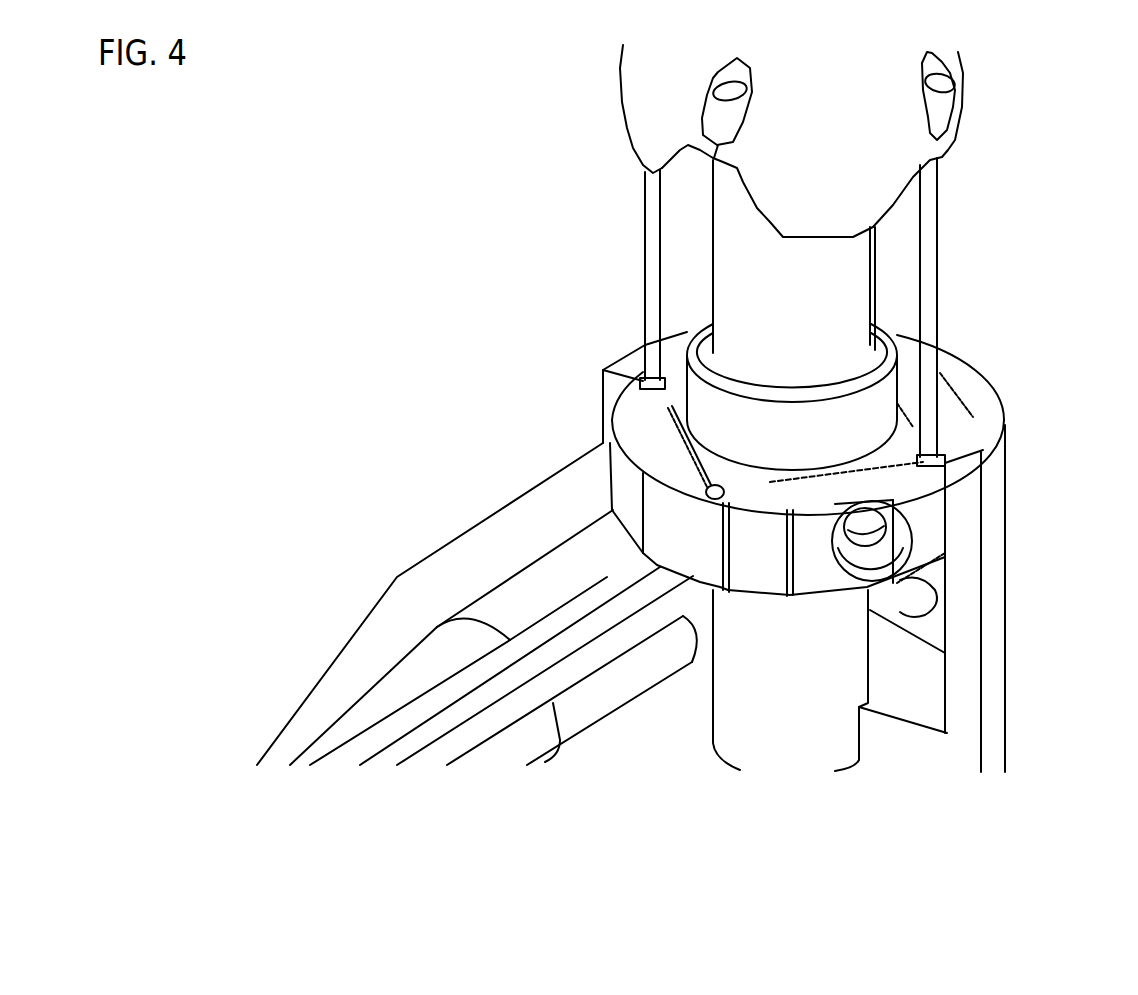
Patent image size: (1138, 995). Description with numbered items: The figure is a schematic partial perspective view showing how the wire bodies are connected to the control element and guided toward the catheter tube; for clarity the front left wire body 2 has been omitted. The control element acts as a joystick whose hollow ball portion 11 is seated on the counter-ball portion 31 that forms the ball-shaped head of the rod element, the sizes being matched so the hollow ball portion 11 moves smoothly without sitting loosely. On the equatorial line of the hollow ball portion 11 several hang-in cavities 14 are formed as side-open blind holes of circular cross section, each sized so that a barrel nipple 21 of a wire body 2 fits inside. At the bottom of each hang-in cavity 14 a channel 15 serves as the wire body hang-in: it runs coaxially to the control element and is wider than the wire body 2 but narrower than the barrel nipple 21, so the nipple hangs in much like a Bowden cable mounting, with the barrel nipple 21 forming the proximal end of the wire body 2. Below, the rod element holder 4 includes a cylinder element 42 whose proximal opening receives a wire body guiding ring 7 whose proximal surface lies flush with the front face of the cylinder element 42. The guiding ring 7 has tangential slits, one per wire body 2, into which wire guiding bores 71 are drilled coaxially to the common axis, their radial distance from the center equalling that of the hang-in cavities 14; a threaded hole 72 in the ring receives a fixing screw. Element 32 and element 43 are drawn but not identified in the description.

The hollow ball portion 11 is at (647, 70).
The hang-in cavity 14 is at (737, 72).
The channel (wire body hang-in) 15 is at (662, 167).
The counter-ball portion 31 is at (727, 185).
The pipe 32 is at (847, 277).
The wire body 2 is at (930, 290).
The barrel nipple 21 is at (938, 108).
The wire body guiding ring 7 is at (637, 417).
The wire guiding bore 71 is at (710, 497).
The rod element holder 4 is at (993, 502).
The threaded hole 72 is at (892, 537).
The cylinder element 42 is at (993, 608).
The arm 43 is at (338, 685).